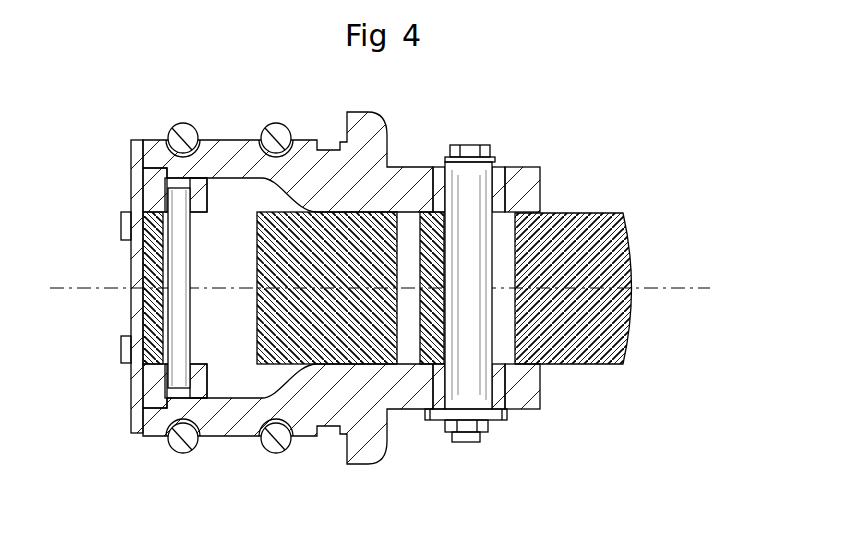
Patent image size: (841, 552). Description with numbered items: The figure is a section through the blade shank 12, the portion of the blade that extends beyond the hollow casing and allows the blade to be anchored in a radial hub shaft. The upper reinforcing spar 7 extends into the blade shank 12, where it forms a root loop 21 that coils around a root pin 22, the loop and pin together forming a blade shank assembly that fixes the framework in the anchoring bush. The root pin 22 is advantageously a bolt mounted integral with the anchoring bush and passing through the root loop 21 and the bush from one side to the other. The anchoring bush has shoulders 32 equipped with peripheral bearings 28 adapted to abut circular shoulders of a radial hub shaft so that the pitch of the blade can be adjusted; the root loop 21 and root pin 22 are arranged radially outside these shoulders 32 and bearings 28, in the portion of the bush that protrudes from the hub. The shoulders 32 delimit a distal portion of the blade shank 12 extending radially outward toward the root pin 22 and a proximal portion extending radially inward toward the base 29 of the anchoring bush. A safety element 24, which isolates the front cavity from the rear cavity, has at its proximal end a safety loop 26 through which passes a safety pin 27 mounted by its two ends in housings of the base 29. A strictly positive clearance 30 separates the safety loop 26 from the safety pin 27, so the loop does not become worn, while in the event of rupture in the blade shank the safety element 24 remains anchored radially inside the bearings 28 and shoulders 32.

The upper reinforcing spar 7 is at (600, 222).
The blade shank 12 is at (390, 436).
The root loops 21 is at (430, 237).
The root pins 22 is at (470, 193).
The safety element 24 is at (332, 253).
The safety loop 26 is at (145, 258).
The safety pin 27 is at (145, 170).
The peripheral bearings 28 is at (190, 135).
The base 29 is at (145, 377).
The clearance 30 is at (145, 303).
The shoulders 32 is at (163, 140).